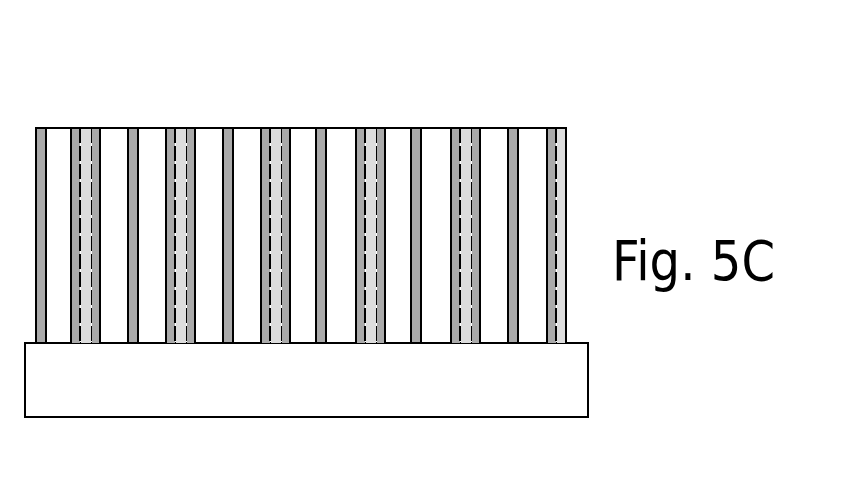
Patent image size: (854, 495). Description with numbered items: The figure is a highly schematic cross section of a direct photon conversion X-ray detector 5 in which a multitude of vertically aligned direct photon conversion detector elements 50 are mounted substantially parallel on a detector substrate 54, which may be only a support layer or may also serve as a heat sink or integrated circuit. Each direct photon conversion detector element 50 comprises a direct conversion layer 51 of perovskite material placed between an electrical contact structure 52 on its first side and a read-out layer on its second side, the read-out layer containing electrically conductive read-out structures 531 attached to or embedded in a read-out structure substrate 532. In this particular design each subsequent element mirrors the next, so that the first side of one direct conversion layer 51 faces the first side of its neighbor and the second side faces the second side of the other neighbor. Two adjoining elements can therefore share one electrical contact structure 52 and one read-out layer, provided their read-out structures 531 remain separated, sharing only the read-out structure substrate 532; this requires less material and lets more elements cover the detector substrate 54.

The direct photon conversion X-ray detector 5 is at (600, 175).
The direct photon conversion detector element 50 is at (559, 123).
The direct conversion layer 51 is at (210, 138).
The electrical contact structure 52 is at (228, 127).
The electrically conductive read-out structures 531 is at (197, 128).
The read-out structure substrate 532 is at (183, 128).
The detector substrate 54 is at (548, 387).